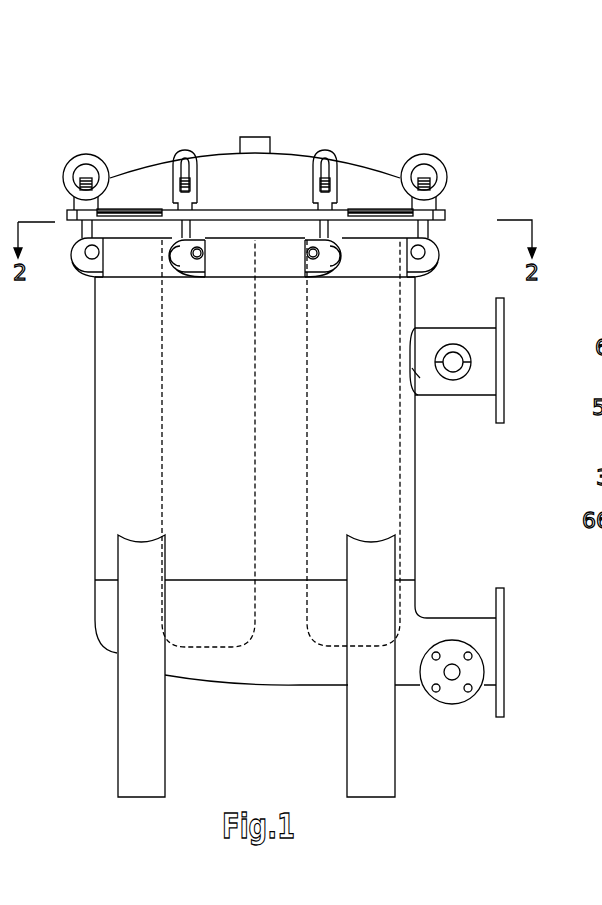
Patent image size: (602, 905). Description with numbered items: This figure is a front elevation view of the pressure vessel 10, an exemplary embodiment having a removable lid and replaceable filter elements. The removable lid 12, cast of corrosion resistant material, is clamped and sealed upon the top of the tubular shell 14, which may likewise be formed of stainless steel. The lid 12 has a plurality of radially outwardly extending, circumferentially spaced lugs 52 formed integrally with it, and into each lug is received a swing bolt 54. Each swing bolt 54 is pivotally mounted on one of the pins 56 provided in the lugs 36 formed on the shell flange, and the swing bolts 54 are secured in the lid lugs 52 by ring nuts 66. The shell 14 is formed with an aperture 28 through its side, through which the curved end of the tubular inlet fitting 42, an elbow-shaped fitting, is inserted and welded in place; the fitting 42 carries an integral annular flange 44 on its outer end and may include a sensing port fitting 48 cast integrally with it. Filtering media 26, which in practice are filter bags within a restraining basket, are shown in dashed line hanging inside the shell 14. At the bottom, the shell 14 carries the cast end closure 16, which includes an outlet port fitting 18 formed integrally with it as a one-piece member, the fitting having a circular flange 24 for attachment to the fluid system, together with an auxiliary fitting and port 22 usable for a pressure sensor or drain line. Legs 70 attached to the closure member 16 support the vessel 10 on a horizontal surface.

The pressure vessel 10 is at (558, 182).
The removable lid 12 is at (221, 141).
The tubular shell 14 is at (90, 418).
The end closure 16 is at (95, 655).
The outlet port fitting 18 is at (457, 618).
The auxiliary fitting and port 22 is at (448, 704).
The circular flange 24 is at (504, 650).
The filtering media 26 is at (162, 458).
The aperture 28 is at (418, 380).
The lugs 36 is at (73, 265).
The tubular inlet fitting 42 is at (465, 412).
The annular flange 44 is at (508, 317).
The sensing port fitting 48 is at (471, 362).
The lugs 52 is at (112, 178).
The swing bolt 54 is at (77, 230).
The pins 56 is at (89, 258).
The ring nuts 66 is at (80, 157).
The legs 70 is at (117, 707).